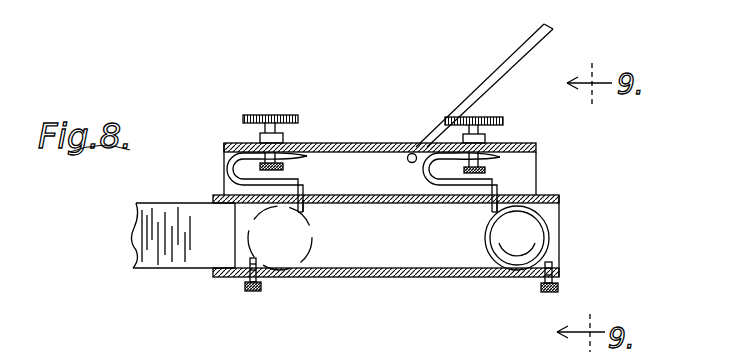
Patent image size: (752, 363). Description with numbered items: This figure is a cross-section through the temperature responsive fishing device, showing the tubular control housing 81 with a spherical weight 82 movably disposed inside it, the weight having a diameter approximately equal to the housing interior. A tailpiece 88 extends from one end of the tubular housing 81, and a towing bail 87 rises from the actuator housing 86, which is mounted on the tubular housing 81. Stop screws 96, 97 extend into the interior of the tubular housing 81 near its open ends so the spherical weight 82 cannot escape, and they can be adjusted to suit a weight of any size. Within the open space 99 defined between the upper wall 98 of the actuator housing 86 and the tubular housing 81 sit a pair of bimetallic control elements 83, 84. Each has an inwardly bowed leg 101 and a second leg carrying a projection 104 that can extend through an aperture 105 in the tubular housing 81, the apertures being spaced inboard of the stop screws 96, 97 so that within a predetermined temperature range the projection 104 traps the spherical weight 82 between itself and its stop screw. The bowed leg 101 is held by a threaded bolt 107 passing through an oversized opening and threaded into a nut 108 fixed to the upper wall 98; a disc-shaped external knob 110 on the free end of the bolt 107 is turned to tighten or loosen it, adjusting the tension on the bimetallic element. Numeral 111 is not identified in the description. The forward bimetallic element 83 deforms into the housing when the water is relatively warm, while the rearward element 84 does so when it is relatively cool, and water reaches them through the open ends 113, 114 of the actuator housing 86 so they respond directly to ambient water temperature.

The tubular control housing 81 is at (375, 278).
The spherical weight 82 is at (533, 237).
The bimetallic control element 83 is at (425, 190).
The bimetallic control element 84 is at (223, 162).
The actuator housing 86 is at (322, 155).
The towing bail 87 is at (524, 50).
The tailpiece 88 is at (153, 255).
The stop screw 96 is at (547, 293).
The stop screw 97 is at (253, 292).
The upper wall 98 is at (368, 145).
The open space 99 is at (343, 157).
The bowed leg 101 is at (421, 161).
The projection 104 is at (304, 212).
The aperture 105 is at (303, 205).
The threaded bolt 107 is at (527, 114).
The nut 108 is at (487, 144).
The external knob 110 is at (249, 113).
The clip tip 111 is at (300, 163).
The open end 113 is at (545, 160).
The open end 114 is at (223, 183).